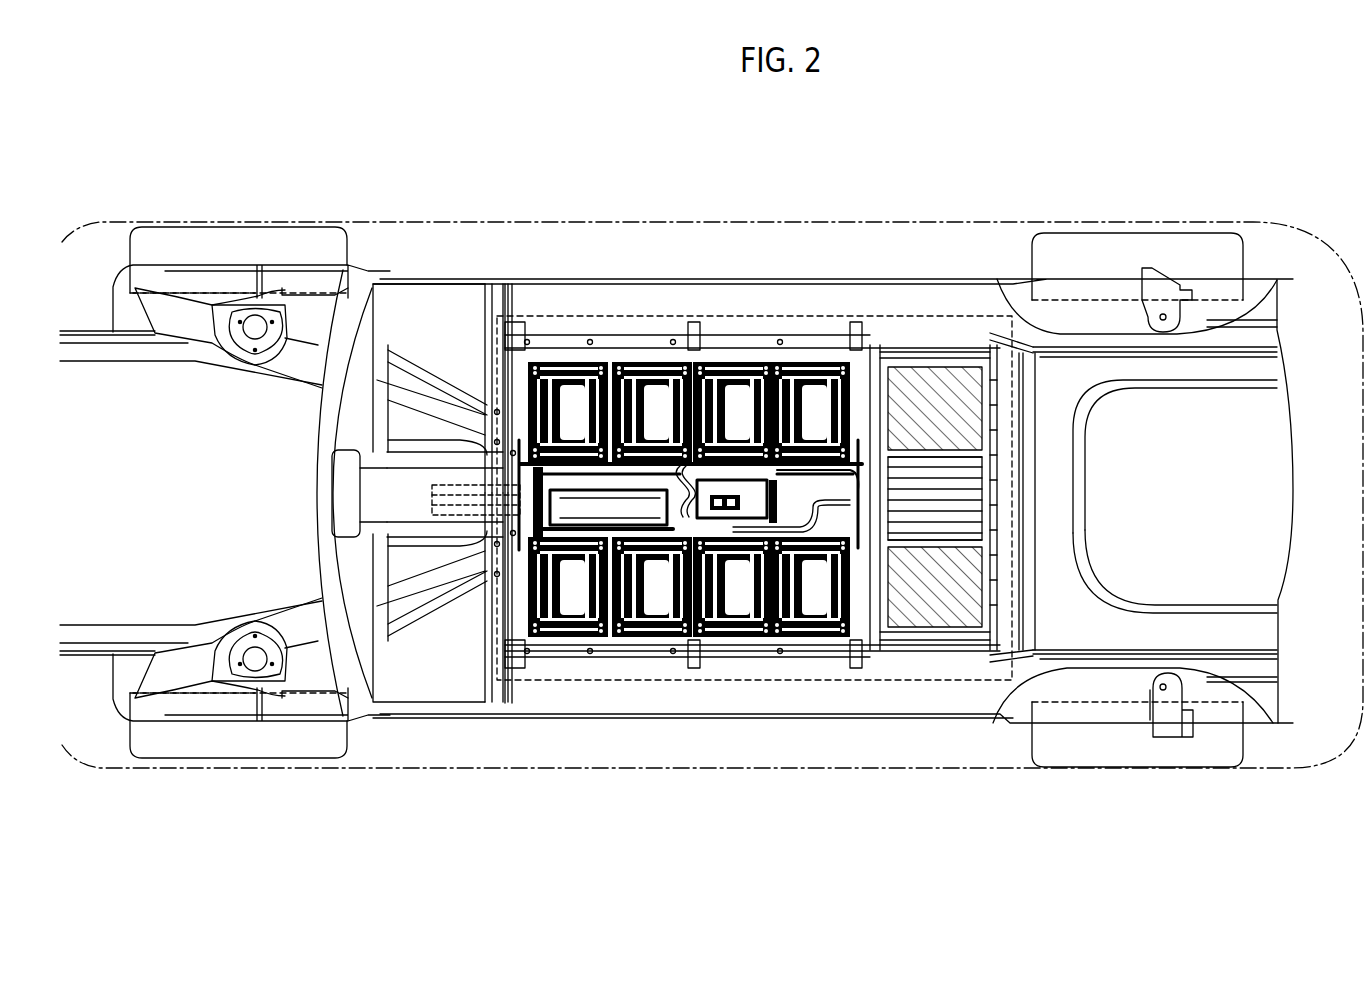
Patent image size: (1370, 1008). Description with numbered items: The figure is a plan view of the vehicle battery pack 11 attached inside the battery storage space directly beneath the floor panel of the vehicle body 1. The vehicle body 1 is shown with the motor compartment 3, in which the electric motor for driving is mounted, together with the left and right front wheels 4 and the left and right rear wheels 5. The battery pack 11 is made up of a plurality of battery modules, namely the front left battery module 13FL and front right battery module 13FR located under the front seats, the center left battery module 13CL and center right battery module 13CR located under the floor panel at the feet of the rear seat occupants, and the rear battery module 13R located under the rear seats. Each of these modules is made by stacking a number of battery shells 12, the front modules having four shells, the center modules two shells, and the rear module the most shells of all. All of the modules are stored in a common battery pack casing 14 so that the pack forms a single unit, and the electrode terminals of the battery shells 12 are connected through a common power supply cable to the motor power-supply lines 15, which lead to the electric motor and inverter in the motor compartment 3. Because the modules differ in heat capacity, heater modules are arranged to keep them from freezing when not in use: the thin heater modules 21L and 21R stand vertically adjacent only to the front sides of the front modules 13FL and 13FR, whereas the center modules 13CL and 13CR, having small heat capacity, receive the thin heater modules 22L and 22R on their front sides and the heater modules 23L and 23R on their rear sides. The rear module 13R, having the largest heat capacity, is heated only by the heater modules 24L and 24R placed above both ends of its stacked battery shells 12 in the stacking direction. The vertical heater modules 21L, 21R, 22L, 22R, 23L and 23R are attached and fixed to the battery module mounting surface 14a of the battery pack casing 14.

The vehicle body 1 is at (1255, 228).
The motor compartment 3 is at (172, 495).
The front wheels 4 is at (243, 225).
The rear wheels 5 is at (1138, 228).
The vehicle battery pack 11 is at (897, 332).
The battery shell 12 is at (819, 493).
The front right battery module 13FR is at (642, 362).
The front left battery module 13FL is at (642, 638).
The center right battery module 13CR is at (808, 362).
The center left battery module 13CL is at (808, 638).
The rear battery module 13R is at (1002, 405).
The battery pack casing 14 is at (700, 357).
The battery module mounting surface 14a is at (727, 353).
The motor power-supply lines 15 is at (432, 498).
The heater module 21R is at (513, 333).
The heater module 21L is at (530, 650).
The heater module 22R is at (697, 332).
The heater module 22L is at (695, 650).
The heater module 23R is at (853, 332).
The heater module 23L is at (853, 650).
The heater module 24R is at (945, 400).
The heater module 24L is at (950, 596).